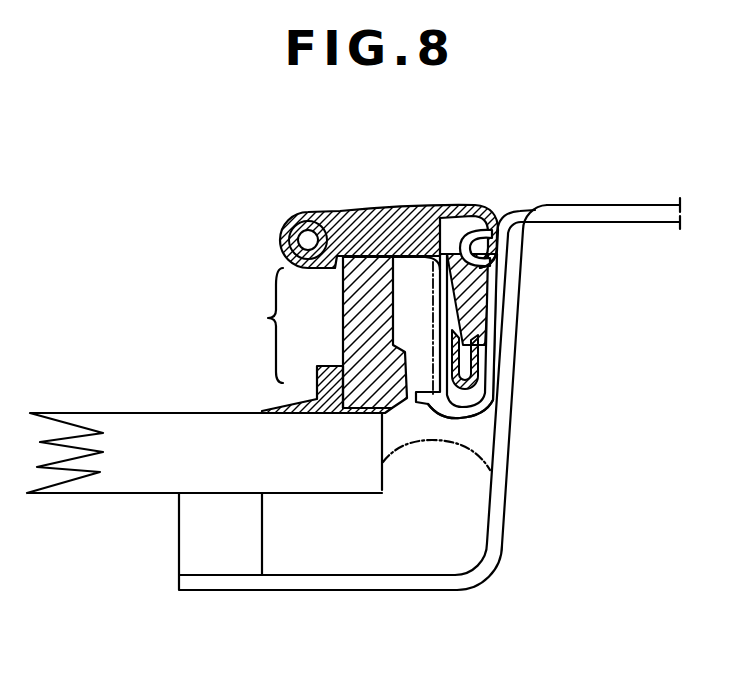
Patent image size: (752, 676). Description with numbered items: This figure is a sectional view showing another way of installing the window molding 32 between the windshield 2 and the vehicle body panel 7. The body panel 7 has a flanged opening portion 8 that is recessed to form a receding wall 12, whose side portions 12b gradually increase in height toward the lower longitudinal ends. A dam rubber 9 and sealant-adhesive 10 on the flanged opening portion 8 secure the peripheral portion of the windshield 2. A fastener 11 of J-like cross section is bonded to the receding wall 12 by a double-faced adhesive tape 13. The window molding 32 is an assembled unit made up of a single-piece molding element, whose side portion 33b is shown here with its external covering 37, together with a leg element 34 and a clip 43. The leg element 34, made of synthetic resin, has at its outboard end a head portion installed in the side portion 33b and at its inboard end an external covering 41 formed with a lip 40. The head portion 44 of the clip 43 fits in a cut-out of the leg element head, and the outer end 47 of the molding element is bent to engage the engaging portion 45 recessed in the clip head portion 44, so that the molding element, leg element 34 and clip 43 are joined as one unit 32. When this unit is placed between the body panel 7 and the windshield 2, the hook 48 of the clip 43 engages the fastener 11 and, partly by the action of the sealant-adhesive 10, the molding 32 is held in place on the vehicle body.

The windshield 2 is at (117, 413).
The vehicle body panel 7 is at (600, 205).
The flanged opening portion 8 is at (227, 592).
The dam rubber 9 is at (197, 540).
The sealant-adhesive 10 is at (426, 556).
The fastener 11 is at (490, 413).
The receding wall 12 is at (517, 377).
The side portions 12b is at (507, 525).
The double-faced adhesive tape 13 is at (505, 303).
The window molding 32 is at (210, 240).
The side portion 33b is at (403, 210).
The leg element 34 is at (367, 277).
The external covering 37 is at (483, 210).
The lip 40 is at (270, 407).
The external covering 41 is at (398, 398).
The clip 43 is at (433, 240).
The head portion 44 is at (318, 218).
The engaging portion 45 is at (470, 212).
The outer end 47 is at (510, 266).
The hook 48 is at (480, 350).